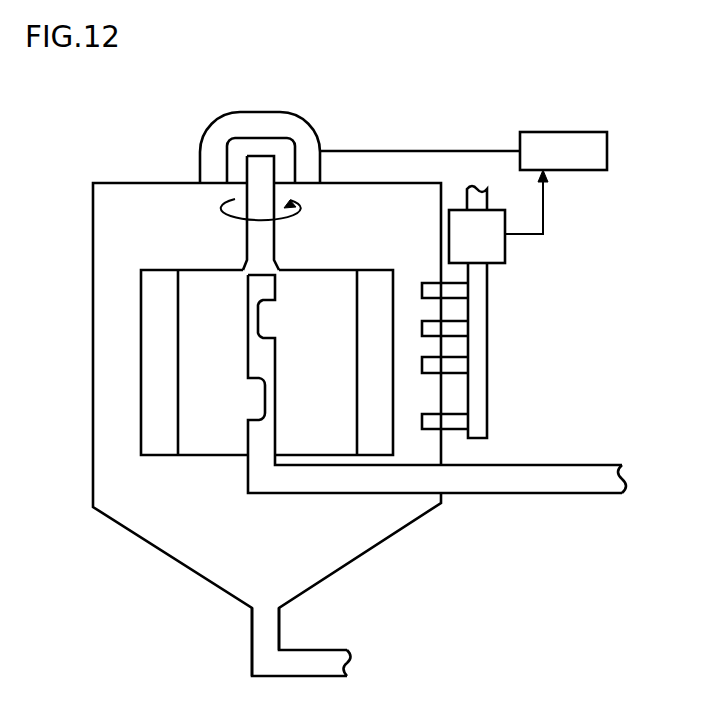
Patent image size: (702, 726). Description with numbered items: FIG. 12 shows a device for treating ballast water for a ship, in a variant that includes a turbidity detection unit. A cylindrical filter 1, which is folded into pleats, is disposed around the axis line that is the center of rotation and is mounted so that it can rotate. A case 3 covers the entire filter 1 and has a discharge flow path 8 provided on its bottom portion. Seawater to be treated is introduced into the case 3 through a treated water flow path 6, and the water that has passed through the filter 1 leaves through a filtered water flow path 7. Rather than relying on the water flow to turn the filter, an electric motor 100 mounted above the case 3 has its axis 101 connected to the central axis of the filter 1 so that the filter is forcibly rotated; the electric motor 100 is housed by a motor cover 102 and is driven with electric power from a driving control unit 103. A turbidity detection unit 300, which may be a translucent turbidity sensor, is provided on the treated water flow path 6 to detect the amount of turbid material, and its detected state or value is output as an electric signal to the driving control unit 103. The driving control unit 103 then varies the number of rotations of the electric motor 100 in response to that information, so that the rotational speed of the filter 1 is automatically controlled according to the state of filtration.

The filter 1 is at (157, 333).
The case 3 is at (93, 415).
The treated water flow path 6 is at (487, 344).
The filtered water flow path 7 is at (478, 493).
The discharge flow path 8 is at (252, 637).
The electric motor 100 is at (280, 148).
The axis 101 is at (260, 168).
The motor cover 102 is at (262, 112).
The driving control unit 103 is at (565, 132).
The turbidity detection unit 300 is at (505, 252).